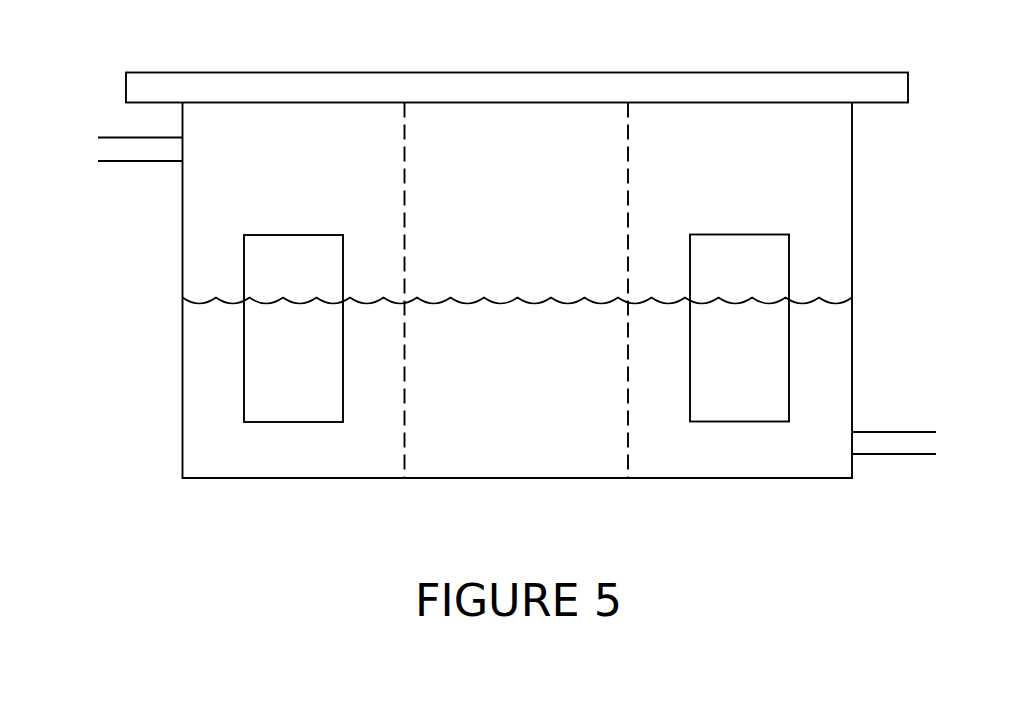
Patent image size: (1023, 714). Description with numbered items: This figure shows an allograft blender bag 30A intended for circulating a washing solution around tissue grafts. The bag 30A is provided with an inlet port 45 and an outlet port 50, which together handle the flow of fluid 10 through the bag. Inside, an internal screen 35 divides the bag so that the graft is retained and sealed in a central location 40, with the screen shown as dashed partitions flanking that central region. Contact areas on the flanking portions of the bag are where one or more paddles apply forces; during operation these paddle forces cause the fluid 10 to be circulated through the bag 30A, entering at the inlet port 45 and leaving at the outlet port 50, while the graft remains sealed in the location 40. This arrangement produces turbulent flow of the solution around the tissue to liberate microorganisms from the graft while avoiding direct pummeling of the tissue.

The fluid 10 is at (828, 357).
The allograft bag 30A is at (505, 478).
The internal screen 35 is at (628, 145).
The location 40 is at (511, 180).
The inlet port 45 is at (128, 163).
The outlet port 50 is at (893, 457).